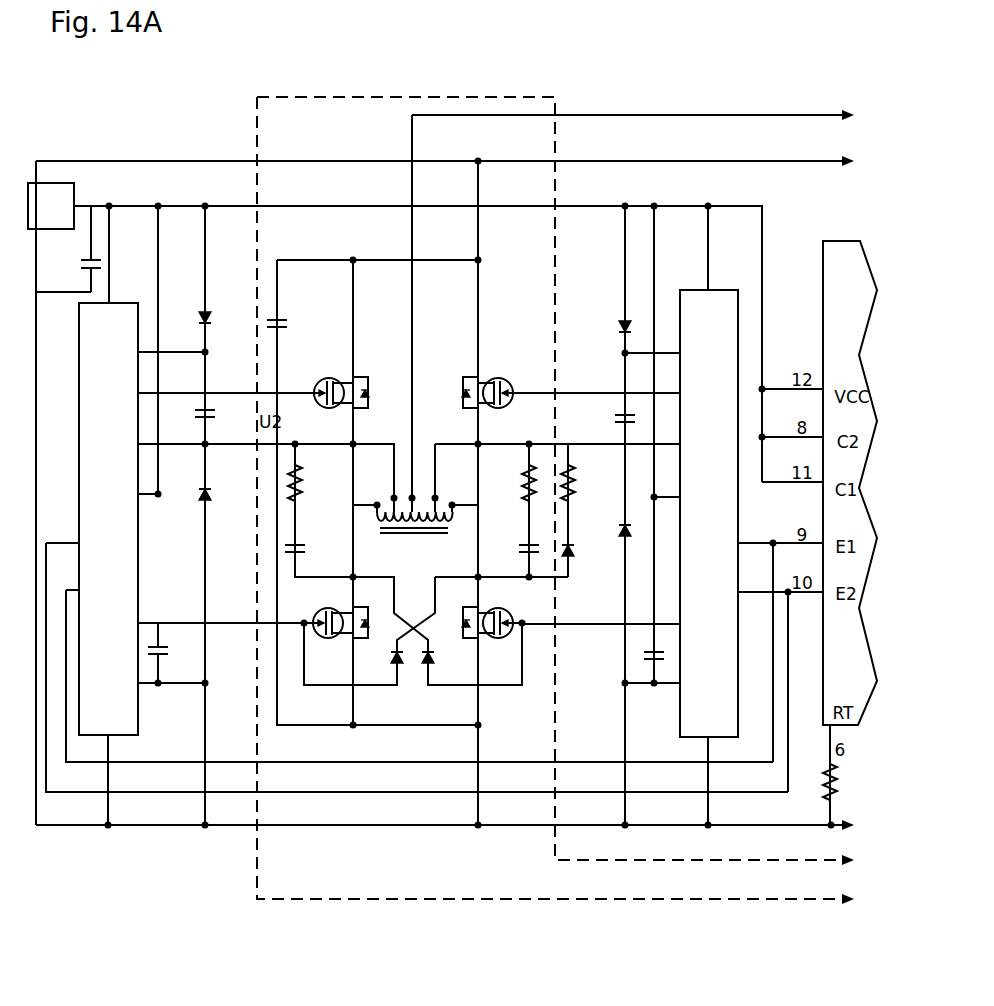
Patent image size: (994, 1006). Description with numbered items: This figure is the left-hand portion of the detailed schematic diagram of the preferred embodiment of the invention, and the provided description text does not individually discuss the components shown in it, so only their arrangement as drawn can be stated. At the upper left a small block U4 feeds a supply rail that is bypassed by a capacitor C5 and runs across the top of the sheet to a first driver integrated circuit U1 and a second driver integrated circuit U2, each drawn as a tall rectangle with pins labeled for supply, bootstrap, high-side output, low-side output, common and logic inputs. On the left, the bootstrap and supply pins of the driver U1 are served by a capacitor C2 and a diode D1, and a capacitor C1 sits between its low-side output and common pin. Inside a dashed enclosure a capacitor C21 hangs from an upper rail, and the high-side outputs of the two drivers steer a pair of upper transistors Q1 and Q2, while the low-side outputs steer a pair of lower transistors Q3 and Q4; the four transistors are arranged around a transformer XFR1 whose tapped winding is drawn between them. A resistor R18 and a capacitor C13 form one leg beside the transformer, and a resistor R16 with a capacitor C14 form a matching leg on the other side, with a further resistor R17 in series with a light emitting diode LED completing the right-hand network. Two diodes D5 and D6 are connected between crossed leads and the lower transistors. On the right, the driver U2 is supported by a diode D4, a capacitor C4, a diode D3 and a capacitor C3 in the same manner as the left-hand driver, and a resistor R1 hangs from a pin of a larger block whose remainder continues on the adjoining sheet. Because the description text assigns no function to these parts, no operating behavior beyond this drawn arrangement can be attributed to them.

The regulator U4 is at (51, 206).
The capacitor C5 is at (74, 249).
The gate driver IC U1 is at (101, 521).
The capacitor C2 is at (220, 414).
The diode D1 is at (220, 494).
The capacitor C1 is at (172, 653).
The capacitor C21 is at (299, 324).
The MOSFET transistor Q1 is at (357, 392).
The MOSFET transistor Q2 is at (466, 392).
The MOSFET transistor Q3 is at (336, 636).
The MOSFET transistor Q4 is at (492, 636).
The resistor R18 is at (314, 483).
The capacitor C13 is at (311, 536).
The resistor R16 is at (508, 483).
The capacitor C14 is at (512, 536).
The resistor R17 is at (587, 483).
The light emitting diode LED is at (585, 562).
The transformer XFR1 is at (415, 530).
The diode D5 is at (390, 682).
The diode D6 is at (430, 682).
The diode D4 is at (609, 328).
The capacitor C4 is at (612, 418).
The diode D3 is at (612, 530).
The capacitor C3 is at (645, 656).
The gate driver IC U2 is at (721, 502).
The resistor R1 is at (817, 782).